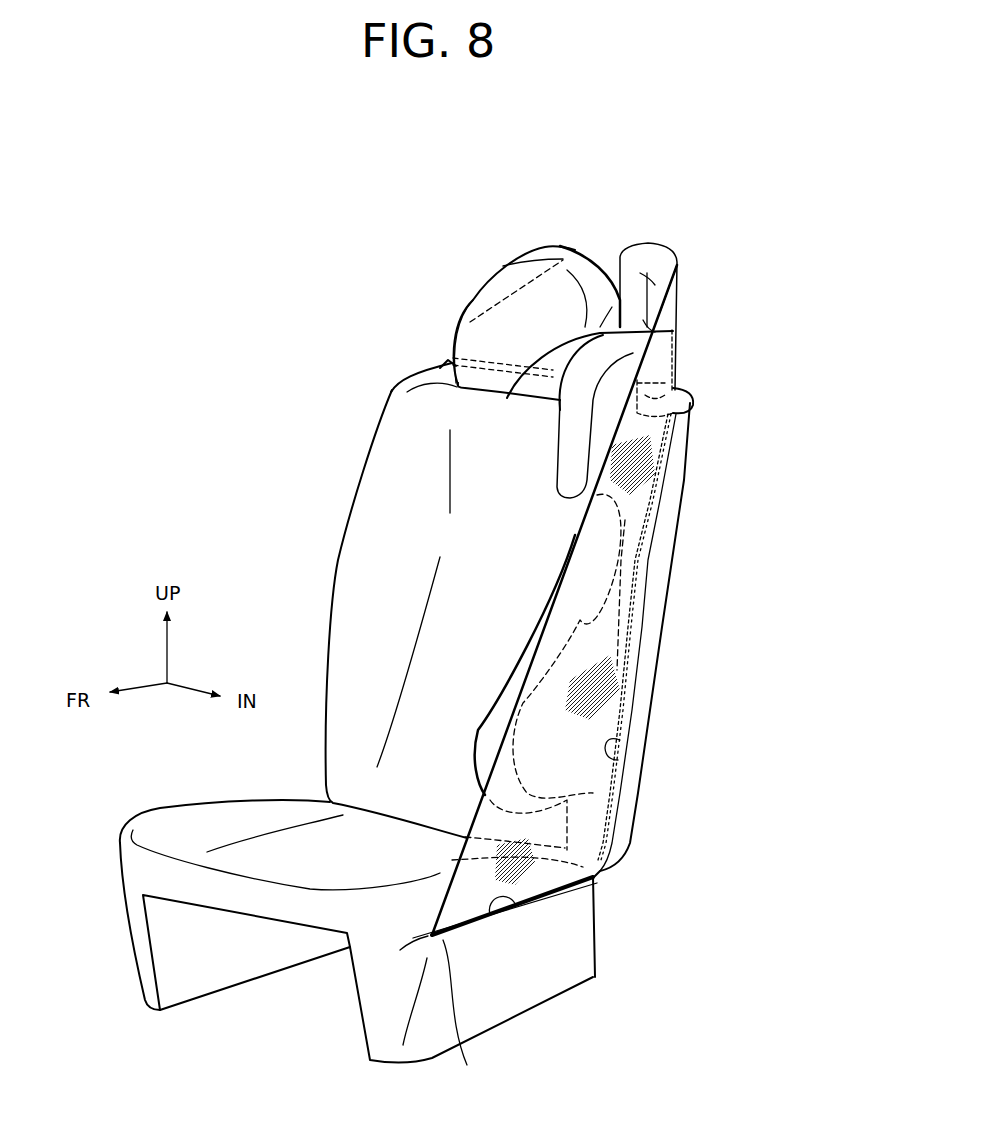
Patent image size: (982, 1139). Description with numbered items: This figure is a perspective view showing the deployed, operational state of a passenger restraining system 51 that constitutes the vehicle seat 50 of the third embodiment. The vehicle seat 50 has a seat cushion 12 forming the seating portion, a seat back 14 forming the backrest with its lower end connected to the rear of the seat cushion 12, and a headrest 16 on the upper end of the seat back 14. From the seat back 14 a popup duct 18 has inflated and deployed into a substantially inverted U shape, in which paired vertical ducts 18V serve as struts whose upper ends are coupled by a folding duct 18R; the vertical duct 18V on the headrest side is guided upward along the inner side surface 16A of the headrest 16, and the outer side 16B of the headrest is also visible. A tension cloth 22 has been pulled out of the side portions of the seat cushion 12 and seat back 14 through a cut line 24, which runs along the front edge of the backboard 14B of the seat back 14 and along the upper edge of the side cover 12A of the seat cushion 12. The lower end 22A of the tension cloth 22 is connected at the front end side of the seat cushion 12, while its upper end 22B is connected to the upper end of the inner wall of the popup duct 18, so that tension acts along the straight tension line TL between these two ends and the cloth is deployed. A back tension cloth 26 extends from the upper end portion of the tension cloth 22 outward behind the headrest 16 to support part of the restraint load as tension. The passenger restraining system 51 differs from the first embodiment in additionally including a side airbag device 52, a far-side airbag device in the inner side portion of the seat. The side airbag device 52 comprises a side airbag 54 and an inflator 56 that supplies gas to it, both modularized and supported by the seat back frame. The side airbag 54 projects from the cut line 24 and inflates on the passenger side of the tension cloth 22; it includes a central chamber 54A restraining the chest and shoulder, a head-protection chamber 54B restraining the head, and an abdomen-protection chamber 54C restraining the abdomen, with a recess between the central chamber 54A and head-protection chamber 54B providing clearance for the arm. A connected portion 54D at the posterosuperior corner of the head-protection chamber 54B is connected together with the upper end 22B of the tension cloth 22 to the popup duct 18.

The seat cushion 12 is at (211, 818).
The side cover 12A is at (583, 947).
The seat back 14 is at (343, 657).
The backboard 14B is at (687, 487).
The headrest 16 is at (517, 273).
The side surface of the headrest 16A is at (517, 383).
The side portion of headrest 16B is at (462, 312).
The popup duct 18 is at (673, 242).
The vertical duct 18V is at (627, 287).
The folding duct 18R is at (648, 250).
The tension cloth 22 is at (566, 542).
The lower end of the tension cloth 22A is at (471, 1019).
The upper end of the tension cloth 22B is at (677, 298).
The cut line 24 is at (515, 910).
The back tension cloth 26 is at (587, 240).
The vehicle seat 50 is at (348, 448).
The passenger restraining system 51 is at (490, 487).
The side airbag device 52 is at (543, 482).
The side airbag 54 is at (540, 433).
The central chamber 54A is at (525, 640).
The head-protection chamber 54B is at (552, 458).
The abdomen-protection chamber 54C is at (483, 748).
The connected portion 54D is at (657, 332).
The inflator 56 is at (620, 638).
The tension line TL is at (475, 813).